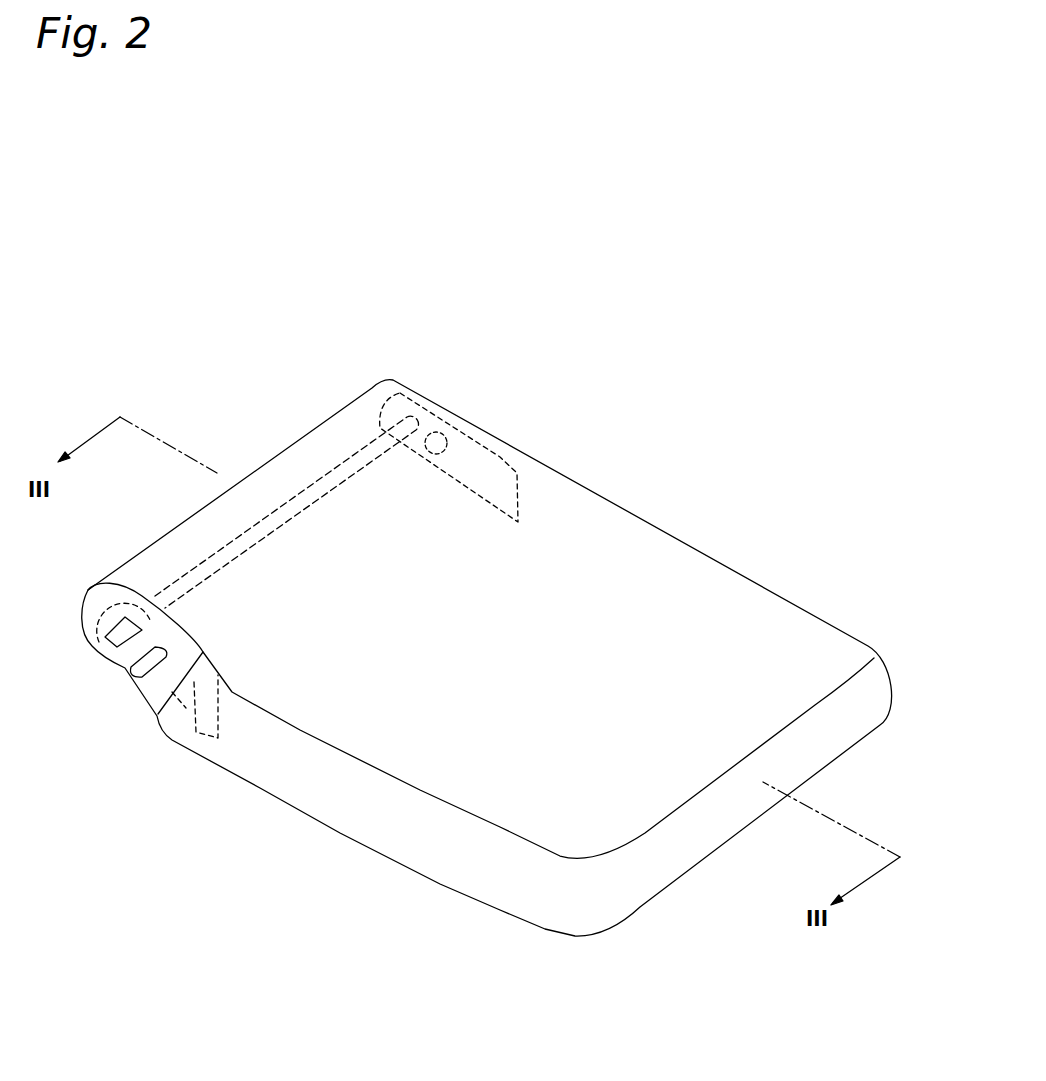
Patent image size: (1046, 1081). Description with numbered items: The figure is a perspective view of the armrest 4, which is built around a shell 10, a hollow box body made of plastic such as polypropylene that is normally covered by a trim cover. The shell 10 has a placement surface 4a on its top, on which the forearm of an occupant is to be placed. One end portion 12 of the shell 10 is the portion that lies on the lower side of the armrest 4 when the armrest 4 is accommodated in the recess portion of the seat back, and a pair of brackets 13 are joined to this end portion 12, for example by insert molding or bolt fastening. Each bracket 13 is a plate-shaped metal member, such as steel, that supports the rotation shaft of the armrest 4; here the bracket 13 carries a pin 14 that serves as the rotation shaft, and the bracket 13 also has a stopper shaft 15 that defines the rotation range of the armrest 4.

The armrest 4 is at (762, 282).
The placement surface 4a is at (673, 582).
The shell 10 is at (832, 610).
The end portion 12 is at (296, 447).
The bracket 13 is at (522, 455).
The pin 14 is at (467, 418).
The stopper shaft 15 is at (107, 647).